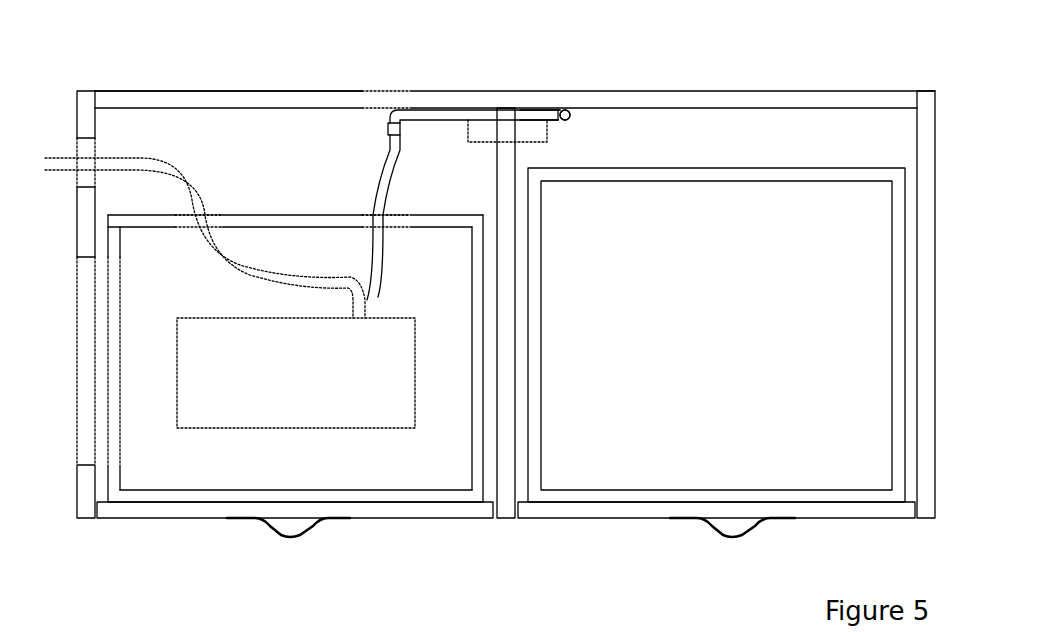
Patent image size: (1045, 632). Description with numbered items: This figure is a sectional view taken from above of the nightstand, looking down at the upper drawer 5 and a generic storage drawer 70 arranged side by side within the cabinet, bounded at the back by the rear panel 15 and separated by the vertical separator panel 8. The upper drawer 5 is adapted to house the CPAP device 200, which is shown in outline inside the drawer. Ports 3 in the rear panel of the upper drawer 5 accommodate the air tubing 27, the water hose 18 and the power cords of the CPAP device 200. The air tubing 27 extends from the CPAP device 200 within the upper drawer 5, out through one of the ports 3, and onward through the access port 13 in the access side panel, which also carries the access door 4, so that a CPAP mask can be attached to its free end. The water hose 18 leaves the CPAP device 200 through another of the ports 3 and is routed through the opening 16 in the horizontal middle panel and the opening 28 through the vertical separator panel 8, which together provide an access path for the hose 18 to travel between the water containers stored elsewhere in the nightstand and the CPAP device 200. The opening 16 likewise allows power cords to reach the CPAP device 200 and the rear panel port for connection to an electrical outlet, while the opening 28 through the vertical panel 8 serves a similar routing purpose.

The access port 13 is at (515, 291).
The rear panel 15 is at (798, 90).
The access door 4 is at (80, 360).
The vertical separator panel 8 is at (507, 189).
The upper drawer 5 is at (368, 482).
The ports 3 is at (370, 220).
The generic storage drawer 70 is at (733, 371).
The air tubing 27 is at (145, 158).
The water hose 18 is at (395, 155).
The opening of horizontal panel 16 is at (533, 128).
The opening through vertical separator panel 28 is at (507, 145).
The CPAP device 200 is at (306, 388).